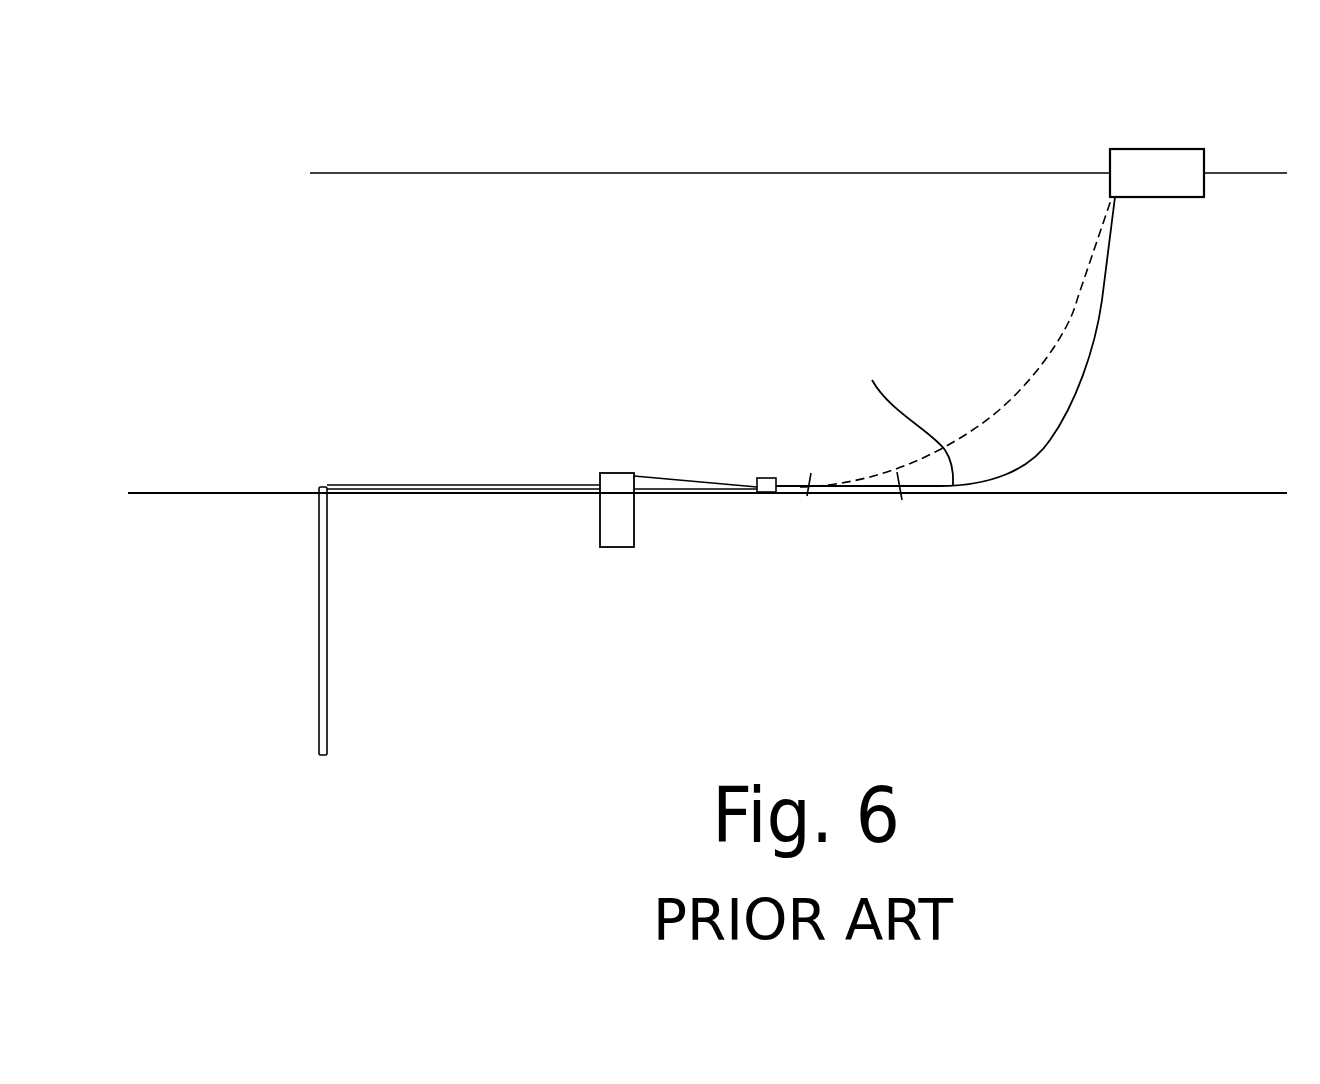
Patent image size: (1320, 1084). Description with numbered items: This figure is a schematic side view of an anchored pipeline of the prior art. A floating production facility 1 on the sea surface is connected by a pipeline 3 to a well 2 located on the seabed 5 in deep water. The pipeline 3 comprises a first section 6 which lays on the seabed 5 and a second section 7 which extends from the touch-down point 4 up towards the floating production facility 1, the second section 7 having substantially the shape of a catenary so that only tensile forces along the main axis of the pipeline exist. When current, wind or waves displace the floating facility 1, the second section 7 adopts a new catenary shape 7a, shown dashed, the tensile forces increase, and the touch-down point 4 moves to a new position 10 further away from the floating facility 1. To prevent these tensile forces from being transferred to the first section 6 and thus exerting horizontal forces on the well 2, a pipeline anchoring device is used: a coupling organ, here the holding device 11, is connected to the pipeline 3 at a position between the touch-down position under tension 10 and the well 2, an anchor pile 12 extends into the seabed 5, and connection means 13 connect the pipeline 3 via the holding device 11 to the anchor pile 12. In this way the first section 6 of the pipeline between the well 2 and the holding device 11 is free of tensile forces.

The production facility 1 is at (1194, 140).
The well 2 is at (306, 578).
The pipeline 3 is at (903, 414).
The touch-down point 4 is at (913, 506).
The seabed 5 is at (234, 477).
The first section 6 is at (428, 470).
The second section 7 is at (1110, 358).
The new catenary shape 7a is at (1036, 351).
The touch-down point under tension 10 is at (795, 508).
The coupling organ 11 is at (766, 464).
The anchor pile 12 is at (613, 460).
The connection means 13 is at (691, 465).